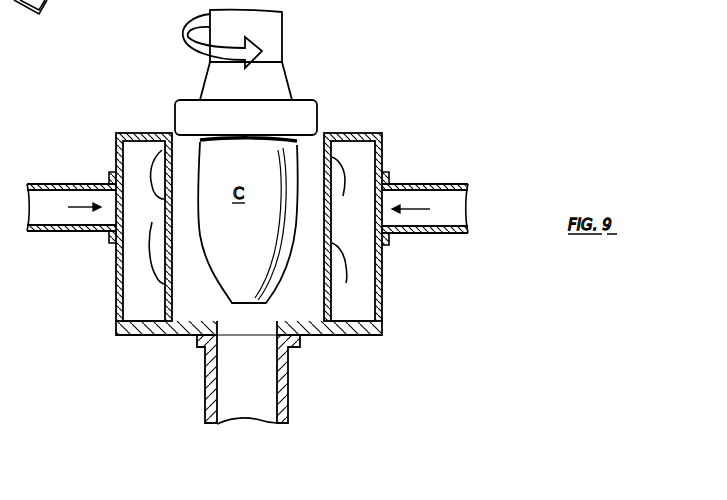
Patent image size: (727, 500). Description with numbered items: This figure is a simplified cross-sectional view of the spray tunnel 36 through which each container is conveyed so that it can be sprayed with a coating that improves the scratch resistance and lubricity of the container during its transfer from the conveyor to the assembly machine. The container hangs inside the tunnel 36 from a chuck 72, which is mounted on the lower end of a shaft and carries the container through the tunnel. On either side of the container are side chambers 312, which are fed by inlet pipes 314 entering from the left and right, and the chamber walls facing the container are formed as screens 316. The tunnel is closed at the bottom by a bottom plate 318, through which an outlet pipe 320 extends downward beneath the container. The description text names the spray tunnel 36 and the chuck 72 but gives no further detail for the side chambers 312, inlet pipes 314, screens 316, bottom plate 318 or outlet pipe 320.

The spray tunnel 36 is at (108, 106).
The chuck 72 is at (286, 80).
The side chambers 312 is at (130, 162).
The inlet pipes 314 is at (45, 215).
The perforated screens 316 is at (343, 290).
The bottom plate 318 is at (345, 333).
The outlet pipe 320 is at (286, 403).